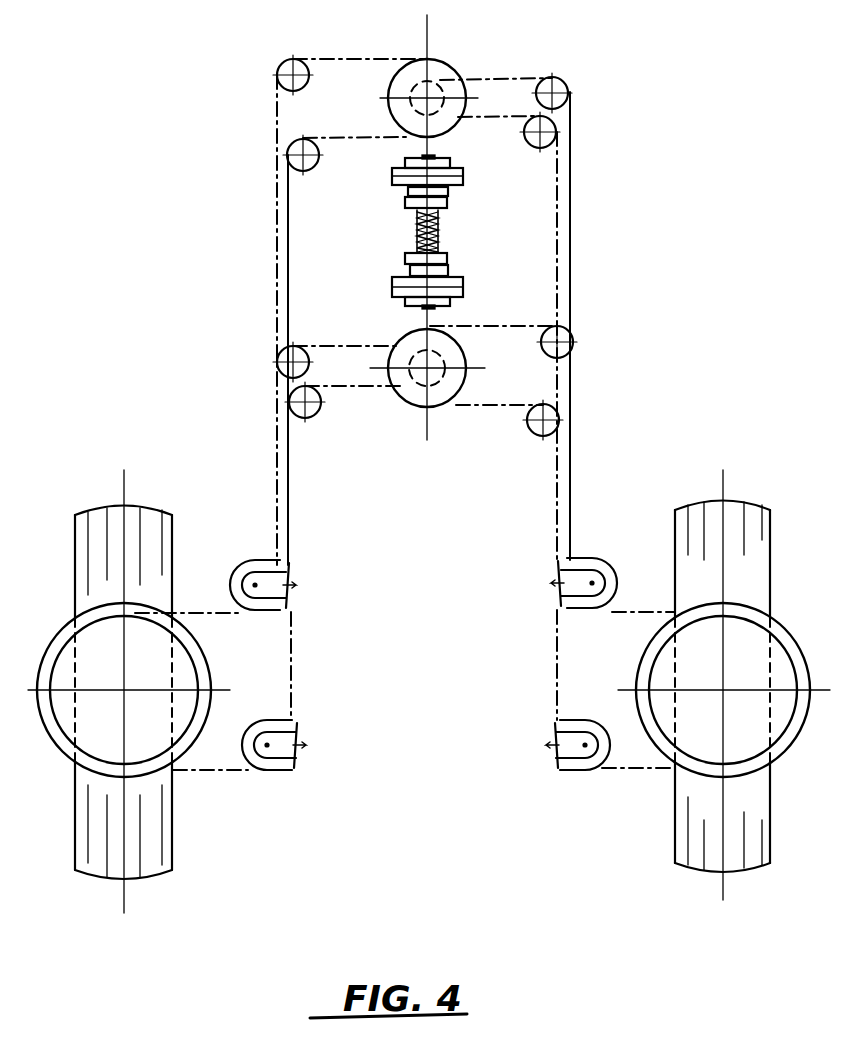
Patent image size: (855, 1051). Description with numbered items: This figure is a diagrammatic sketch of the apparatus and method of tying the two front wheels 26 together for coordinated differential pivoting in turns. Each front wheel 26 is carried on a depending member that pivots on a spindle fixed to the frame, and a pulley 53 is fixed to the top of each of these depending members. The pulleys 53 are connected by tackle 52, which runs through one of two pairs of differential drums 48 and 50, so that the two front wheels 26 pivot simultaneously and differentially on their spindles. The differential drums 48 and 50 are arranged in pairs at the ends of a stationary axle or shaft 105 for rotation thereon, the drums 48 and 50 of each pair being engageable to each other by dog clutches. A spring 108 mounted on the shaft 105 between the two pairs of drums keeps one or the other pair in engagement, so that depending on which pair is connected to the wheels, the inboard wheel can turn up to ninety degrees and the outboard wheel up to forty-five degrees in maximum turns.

The front wheel 26 is at (75, 560).
The differential drum 48 is at (435, 80).
The differential drum 50 is at (426, 58).
The tackle 52 is at (573, 397).
The pulley 53 is at (63, 628).
The shaft 105 is at (440, 155).
The spring 108 is at (408, 243).